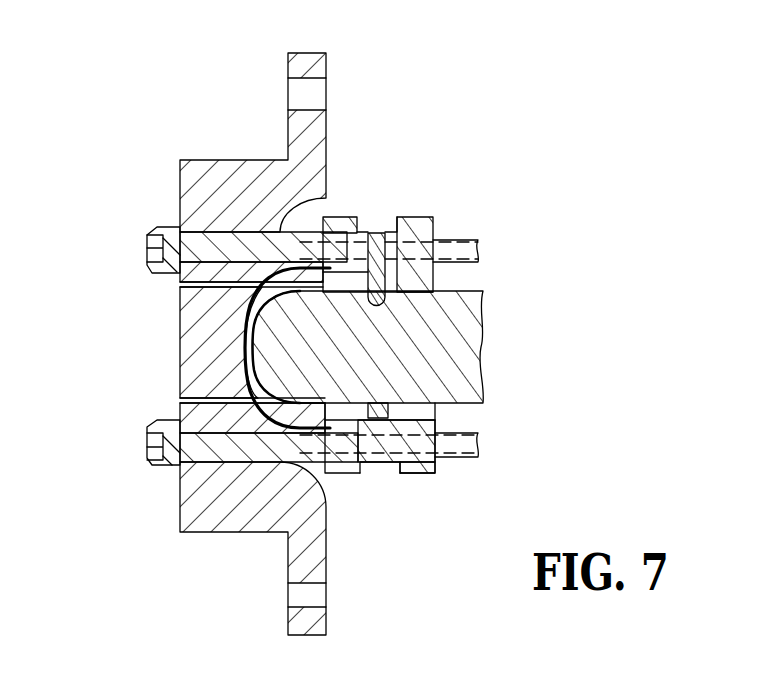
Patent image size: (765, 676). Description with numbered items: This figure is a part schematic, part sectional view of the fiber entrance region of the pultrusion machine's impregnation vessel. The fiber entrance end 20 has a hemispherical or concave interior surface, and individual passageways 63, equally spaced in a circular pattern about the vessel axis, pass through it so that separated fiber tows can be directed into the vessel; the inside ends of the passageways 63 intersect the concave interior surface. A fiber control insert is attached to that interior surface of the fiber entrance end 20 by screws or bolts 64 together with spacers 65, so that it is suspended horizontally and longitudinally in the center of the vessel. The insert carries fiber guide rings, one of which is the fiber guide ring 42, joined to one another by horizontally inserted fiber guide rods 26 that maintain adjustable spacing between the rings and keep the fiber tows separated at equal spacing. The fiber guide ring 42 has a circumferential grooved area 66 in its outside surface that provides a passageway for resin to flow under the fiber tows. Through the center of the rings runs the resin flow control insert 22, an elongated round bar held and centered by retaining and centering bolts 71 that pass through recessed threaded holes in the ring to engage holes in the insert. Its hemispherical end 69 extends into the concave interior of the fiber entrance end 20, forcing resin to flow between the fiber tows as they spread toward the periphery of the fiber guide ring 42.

The fiber entrance end 20 is at (237, 160).
The resin flow control insert 22 is at (483, 345).
The fiber guide rods 26 is at (458, 240).
The fiber guide ring 42 is at (420, 476).
The passageways 63 is at (181, 298).
The bolts 64 is at (158, 224).
The spacers 65 is at (299, 486).
The circumferential grooved area 66 is at (382, 465).
The hemispherical end 69 is at (244, 350).
The retaining and centering bolts 71 is at (390, 232).